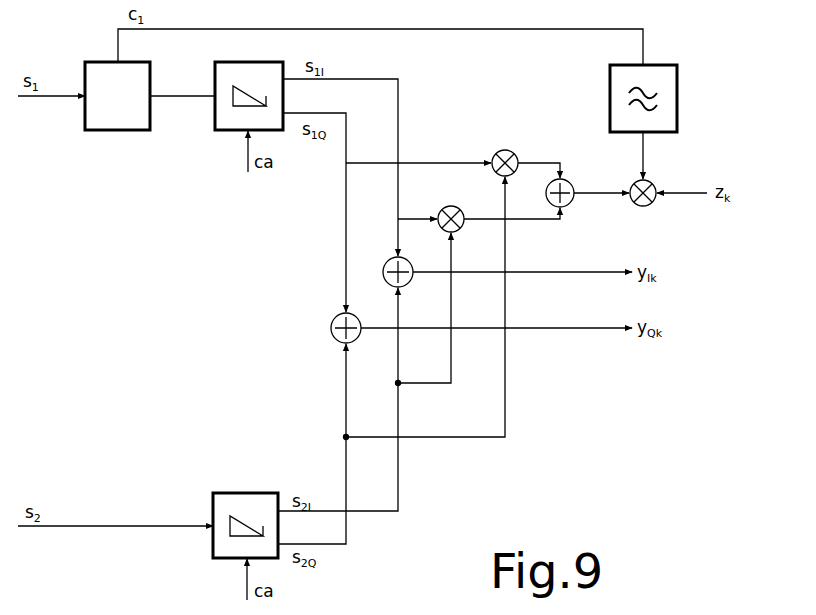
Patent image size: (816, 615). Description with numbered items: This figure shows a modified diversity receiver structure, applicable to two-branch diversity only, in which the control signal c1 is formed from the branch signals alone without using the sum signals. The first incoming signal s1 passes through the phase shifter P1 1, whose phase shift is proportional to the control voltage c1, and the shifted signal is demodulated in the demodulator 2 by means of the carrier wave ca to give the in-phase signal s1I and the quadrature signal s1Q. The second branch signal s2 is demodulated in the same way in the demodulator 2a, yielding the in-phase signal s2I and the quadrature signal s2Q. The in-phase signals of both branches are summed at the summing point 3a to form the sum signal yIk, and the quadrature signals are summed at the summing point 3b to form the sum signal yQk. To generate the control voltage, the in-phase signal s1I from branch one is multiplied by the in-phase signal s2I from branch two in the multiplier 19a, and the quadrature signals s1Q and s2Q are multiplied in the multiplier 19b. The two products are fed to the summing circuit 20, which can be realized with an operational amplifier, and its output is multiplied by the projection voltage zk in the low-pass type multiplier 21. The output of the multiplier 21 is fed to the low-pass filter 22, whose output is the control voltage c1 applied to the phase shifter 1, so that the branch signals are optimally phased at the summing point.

The phase shifter P1 1 is at (106, 132).
The demodulator 2 is at (232, 132).
The demodulator 2a is at (222, 560).
The summing point 3a is at (385, 265).
The summing point 3b is at (331, 328).
The multiplier 19a is at (451, 206).
The multiplier 19b is at (510, 151).
The summing circuit 20 is at (565, 180).
The multiplier 21 is at (652, 182).
The low-pass filter 22 is at (677, 88).